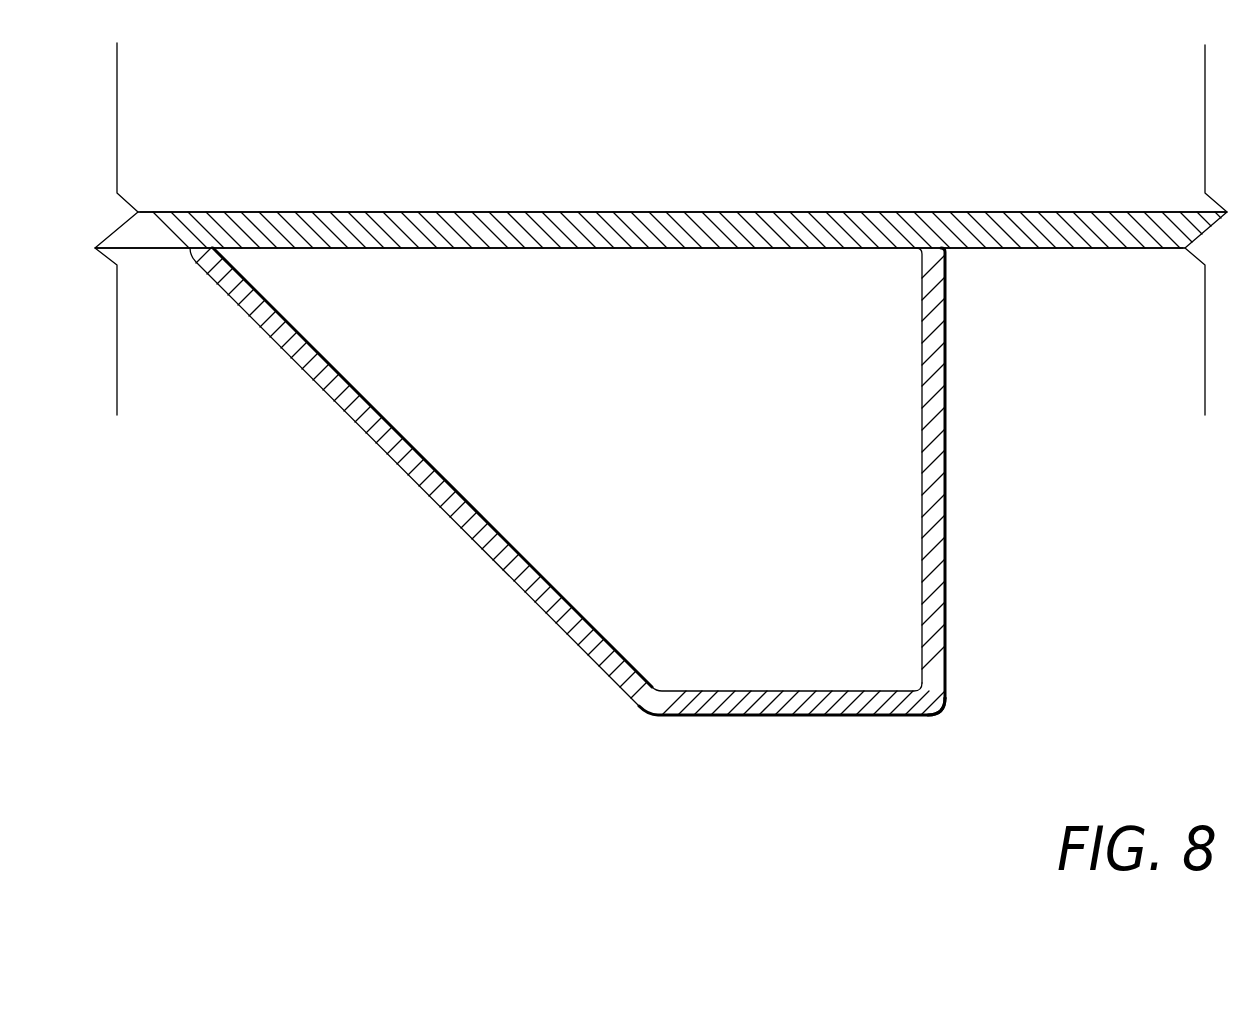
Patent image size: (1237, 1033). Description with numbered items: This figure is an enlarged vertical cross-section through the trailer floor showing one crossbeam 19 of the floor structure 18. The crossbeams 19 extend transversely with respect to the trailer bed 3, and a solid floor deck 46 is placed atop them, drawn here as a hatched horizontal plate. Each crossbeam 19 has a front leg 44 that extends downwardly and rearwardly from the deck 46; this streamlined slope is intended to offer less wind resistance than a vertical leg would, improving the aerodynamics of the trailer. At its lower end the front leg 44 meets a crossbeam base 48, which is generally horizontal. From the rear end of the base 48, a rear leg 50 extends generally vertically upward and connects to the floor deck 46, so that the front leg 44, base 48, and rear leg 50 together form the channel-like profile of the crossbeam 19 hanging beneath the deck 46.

The trailer bed 3 is at (577, 212).
The floor structure 18 is at (507, 212).
The deck 46 is at (772, 234).
The front leg 44 is at (420, 488).
The crossbeam base 48 is at (800, 717).
The rear leg 50 is at (945, 520).
The crossbeam 19 is at (940, 710).